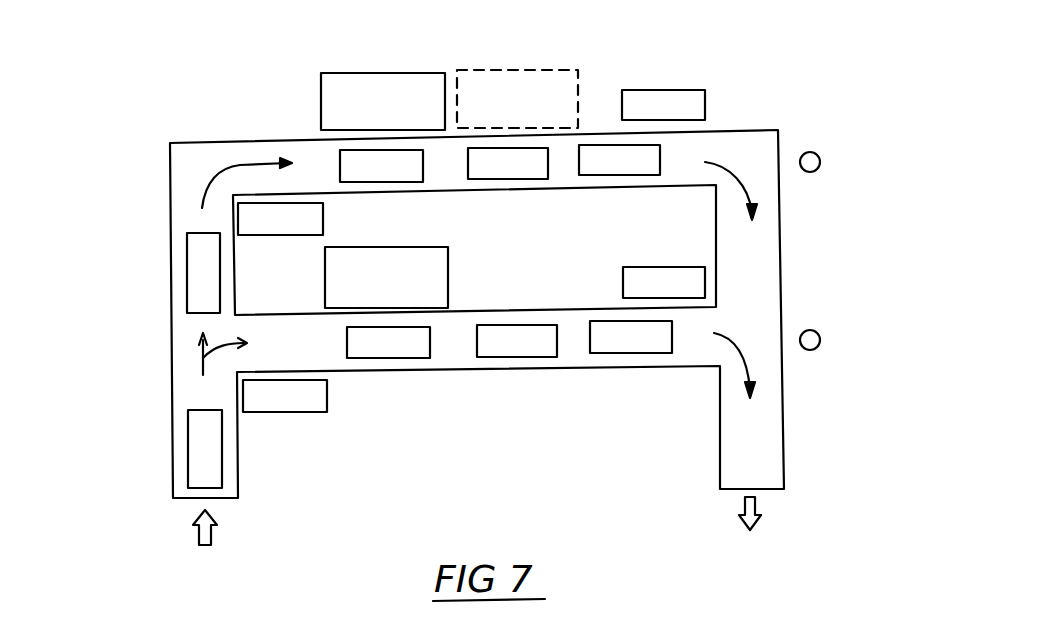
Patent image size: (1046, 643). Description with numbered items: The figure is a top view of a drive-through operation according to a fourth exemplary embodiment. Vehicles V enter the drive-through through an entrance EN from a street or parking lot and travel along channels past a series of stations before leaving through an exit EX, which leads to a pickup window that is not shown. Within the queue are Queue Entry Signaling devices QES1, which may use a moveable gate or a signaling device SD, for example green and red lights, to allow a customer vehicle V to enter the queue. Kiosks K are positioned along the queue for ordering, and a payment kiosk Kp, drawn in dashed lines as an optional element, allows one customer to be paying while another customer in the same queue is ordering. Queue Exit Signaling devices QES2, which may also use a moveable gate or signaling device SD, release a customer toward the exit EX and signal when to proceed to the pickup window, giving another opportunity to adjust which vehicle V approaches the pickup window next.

The kiosk K is at (378, 72).
The payment kiosk Kp is at (548, 68).
The Queue Entry Signaling device QES1 is at (262, 210).
The Queue Exit Signaling device QES2 is at (705, 96).
The vehicle V is at (390, 183).
The signaling device SD is at (820, 162).
The entrance EN is at (176, 528).
The exit EX is at (718, 513).